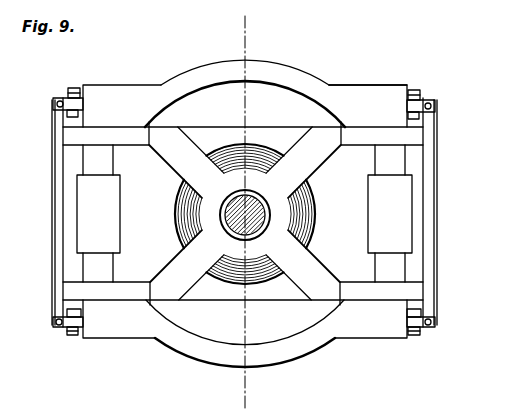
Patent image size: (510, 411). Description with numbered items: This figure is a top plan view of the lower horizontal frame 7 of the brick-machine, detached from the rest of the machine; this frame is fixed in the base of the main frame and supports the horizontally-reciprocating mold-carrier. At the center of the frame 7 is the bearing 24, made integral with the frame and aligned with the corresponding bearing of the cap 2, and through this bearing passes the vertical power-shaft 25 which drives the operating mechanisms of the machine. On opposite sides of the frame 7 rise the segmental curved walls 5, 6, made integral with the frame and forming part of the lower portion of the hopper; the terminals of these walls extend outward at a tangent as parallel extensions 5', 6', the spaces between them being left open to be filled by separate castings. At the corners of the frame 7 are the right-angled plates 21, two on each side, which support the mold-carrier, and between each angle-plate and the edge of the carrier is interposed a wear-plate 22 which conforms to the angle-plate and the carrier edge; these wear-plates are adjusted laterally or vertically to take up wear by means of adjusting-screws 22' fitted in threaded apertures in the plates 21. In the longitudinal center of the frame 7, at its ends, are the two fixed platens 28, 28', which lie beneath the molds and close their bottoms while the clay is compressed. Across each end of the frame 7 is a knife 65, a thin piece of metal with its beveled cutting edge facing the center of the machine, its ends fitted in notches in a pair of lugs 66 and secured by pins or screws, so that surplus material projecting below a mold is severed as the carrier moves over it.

The cap 2 is at (244, 204).
The upwardly-extending wall 5 is at (245, 364).
The extension of wall 5' is at (245, 319).
The upwardly-extending wall 6 is at (245, 62).
The extension of wall 6' is at (245, 106).
The horizontal stationary frame 7 is at (349, 80).
The right-angled plate 21 is at (64, 99).
The wear-plate 22 is at (243, 213).
The adjusting-screw 22' is at (263, 210).
The bearing 24 is at (312, 215).
The vertical power-shaft 25 is at (220, 215).
The fixed platen 28 is at (98, 213).
The fixed platen 28' is at (390, 213).
The knife 65 is at (52, 222).
The lug 66 is at (57, 104).